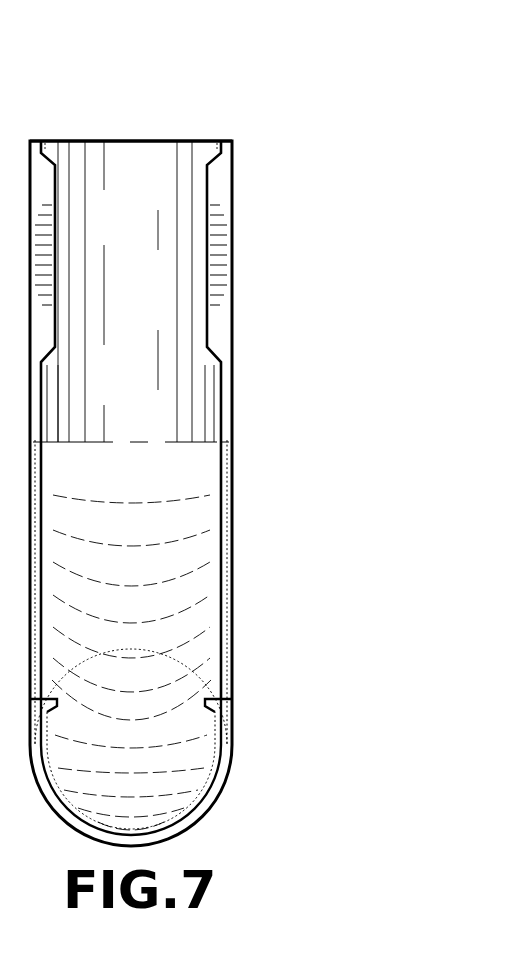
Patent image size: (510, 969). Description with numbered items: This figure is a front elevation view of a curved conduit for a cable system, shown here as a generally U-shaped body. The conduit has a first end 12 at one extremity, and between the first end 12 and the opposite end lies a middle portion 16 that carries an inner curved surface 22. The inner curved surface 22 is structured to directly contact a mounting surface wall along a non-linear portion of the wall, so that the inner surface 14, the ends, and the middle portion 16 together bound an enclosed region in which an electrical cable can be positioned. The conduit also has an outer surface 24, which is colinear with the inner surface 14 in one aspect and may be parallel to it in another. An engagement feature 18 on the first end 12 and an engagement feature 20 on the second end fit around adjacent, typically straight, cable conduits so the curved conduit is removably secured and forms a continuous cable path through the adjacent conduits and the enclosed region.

The first end 12 is at (133, 140).
The inner surface 14 is at (98, 153).
The middle portion 16 is at (229, 567).
The engagement feature 18 is at (217, 212).
The engagement feature 20 is at (211, 698).
The inner curved surface 22 is at (218, 634).
The outer surface 24 is at (181, 401).